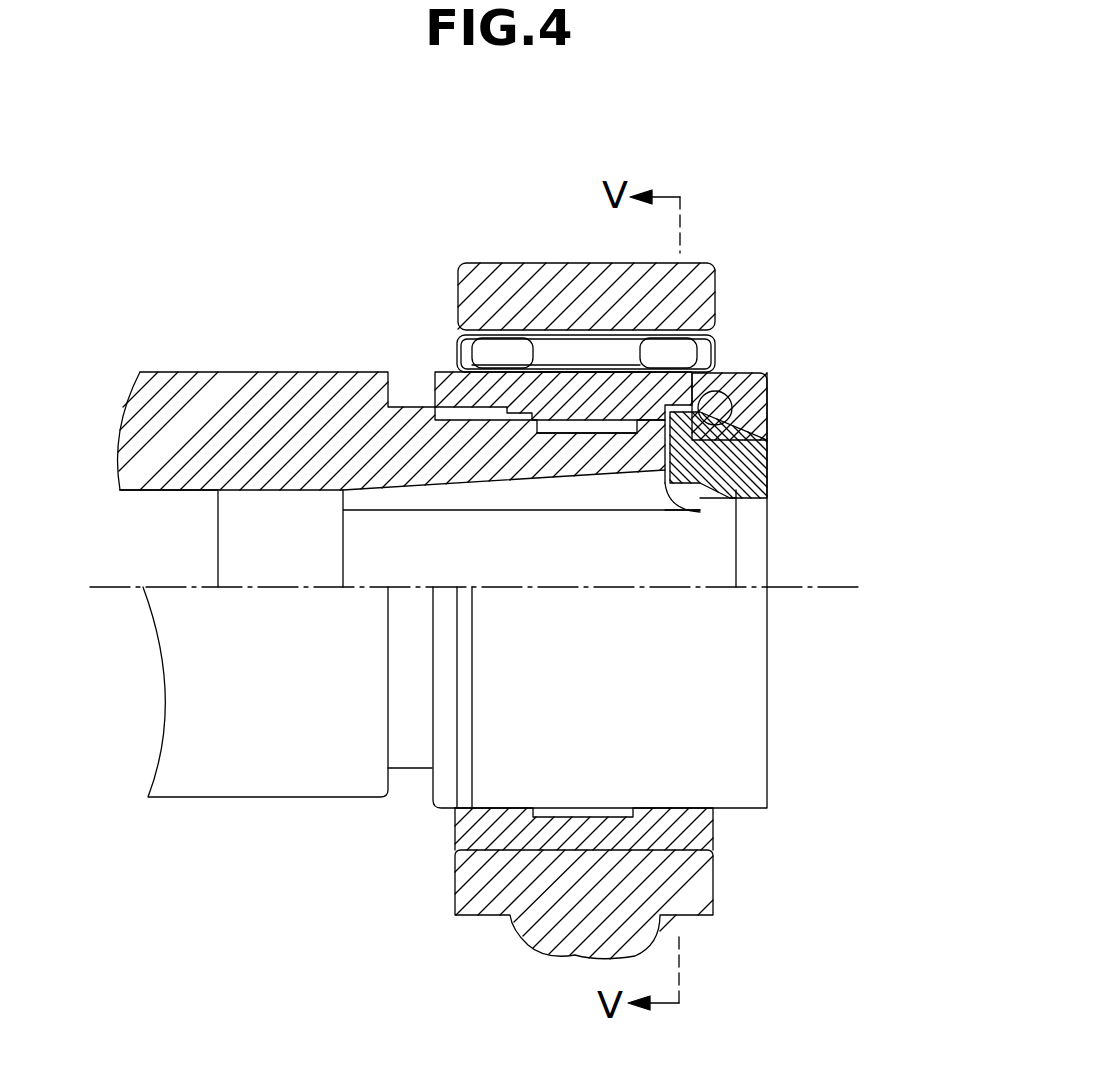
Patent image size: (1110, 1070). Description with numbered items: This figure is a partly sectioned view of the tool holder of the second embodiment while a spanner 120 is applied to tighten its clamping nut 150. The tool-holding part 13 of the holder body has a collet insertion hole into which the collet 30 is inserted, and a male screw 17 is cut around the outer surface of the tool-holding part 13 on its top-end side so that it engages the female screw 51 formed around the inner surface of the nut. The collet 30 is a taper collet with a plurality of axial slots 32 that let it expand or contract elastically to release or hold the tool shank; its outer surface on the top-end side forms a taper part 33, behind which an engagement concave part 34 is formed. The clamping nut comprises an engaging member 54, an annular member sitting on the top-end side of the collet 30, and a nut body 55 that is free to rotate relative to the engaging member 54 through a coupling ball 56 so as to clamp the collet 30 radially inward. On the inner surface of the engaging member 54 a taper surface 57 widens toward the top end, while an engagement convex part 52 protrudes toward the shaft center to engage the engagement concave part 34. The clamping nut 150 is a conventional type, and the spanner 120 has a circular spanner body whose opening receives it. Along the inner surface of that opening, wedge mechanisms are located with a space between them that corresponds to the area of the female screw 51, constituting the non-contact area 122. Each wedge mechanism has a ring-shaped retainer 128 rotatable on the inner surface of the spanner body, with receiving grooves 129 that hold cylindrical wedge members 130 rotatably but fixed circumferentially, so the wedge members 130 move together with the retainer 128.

The tool-holding part 13 is at (200, 370).
The male screw 17 is at (583, 427).
The collet 30 is at (715, 498).
The slots 32 is at (652, 500).
The taper part 33 is at (770, 460).
The engagement concave part 34 is at (655, 507).
The female screw 51 is at (607, 375).
The engagement convex part 52 is at (700, 505).
The engaging member 54 is at (770, 447).
The nut body 55 is at (513, 383).
The coupling ball 56 is at (724, 400).
The taper surface 57 is at (770, 495).
The spanner 120 is at (720, 282).
The non-contact area 122 is at (573, 372).
The retainer 128 is at (456, 356).
The receiving grooves 129 is at (455, 336).
The wedge members 130 is at (493, 350).
The clamping nut 150 is at (738, 700).